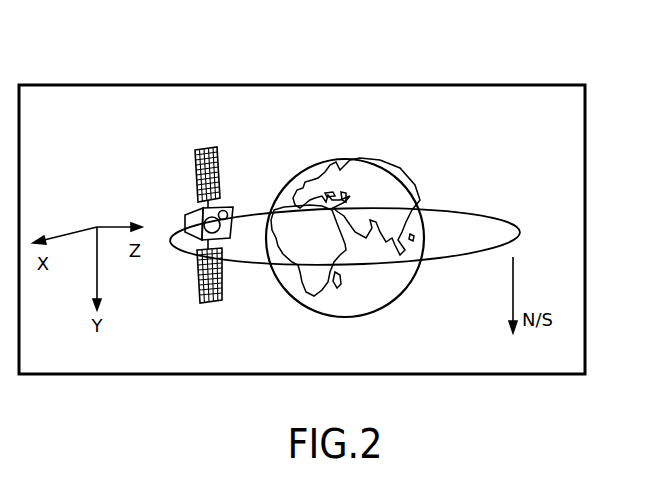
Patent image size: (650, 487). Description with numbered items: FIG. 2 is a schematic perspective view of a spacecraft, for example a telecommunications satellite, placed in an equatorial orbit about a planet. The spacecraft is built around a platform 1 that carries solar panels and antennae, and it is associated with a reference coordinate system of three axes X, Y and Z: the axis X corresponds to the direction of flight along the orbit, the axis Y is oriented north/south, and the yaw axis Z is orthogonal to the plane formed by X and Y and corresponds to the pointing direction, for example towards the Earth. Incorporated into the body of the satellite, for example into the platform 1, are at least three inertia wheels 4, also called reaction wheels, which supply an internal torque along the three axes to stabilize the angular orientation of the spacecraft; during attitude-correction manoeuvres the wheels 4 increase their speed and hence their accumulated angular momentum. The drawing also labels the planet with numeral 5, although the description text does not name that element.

The platform 1 is at (209, 225).
The inertia wheels 4 is at (487, 217).
The Earth 5 is at (367, 183).